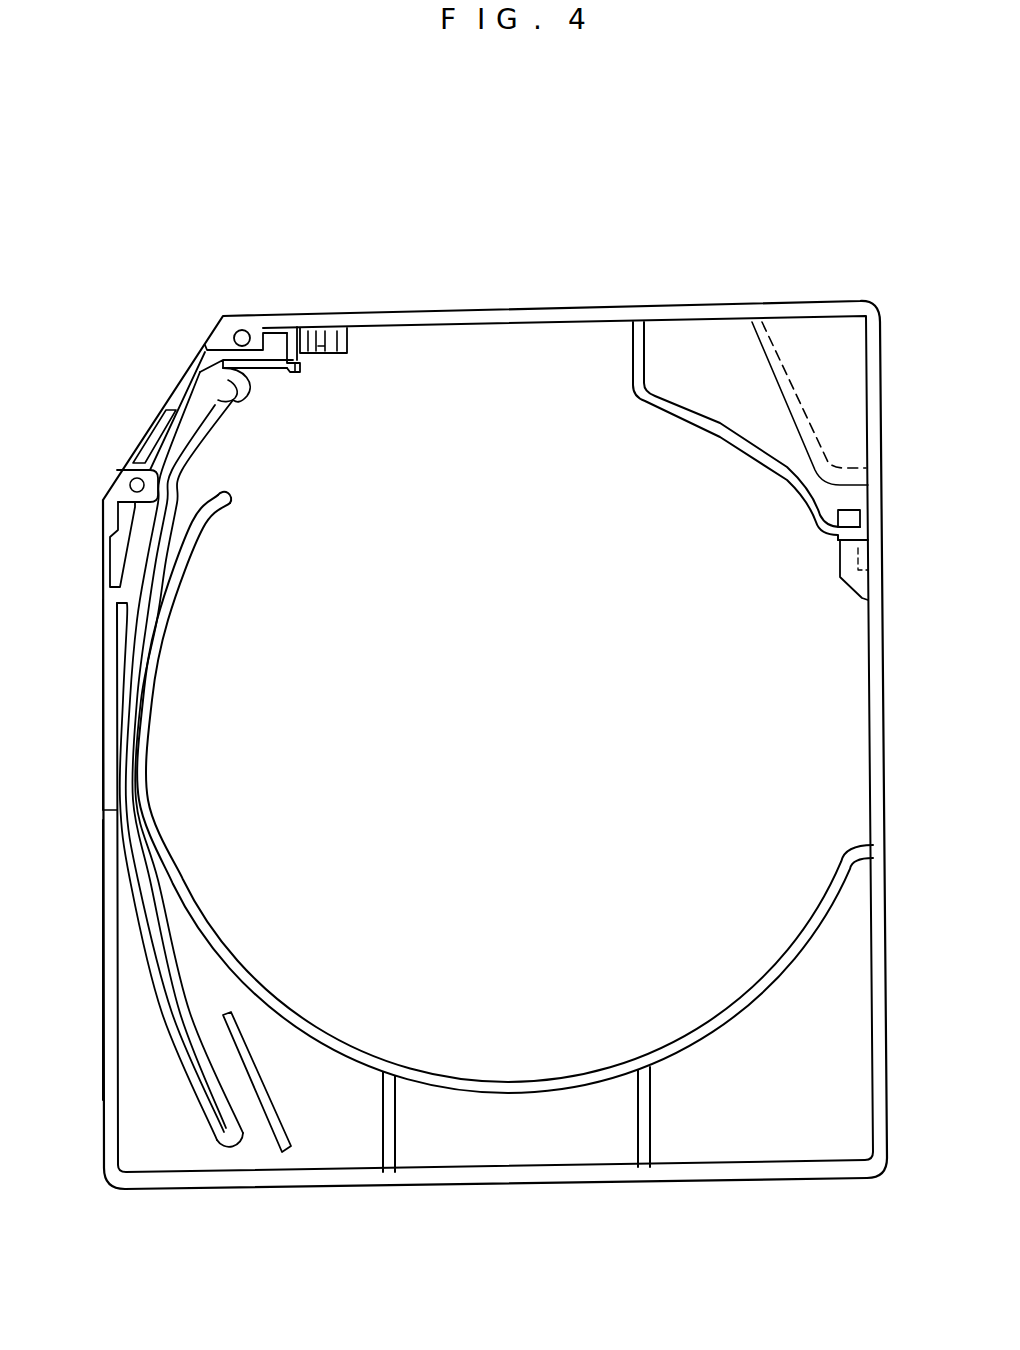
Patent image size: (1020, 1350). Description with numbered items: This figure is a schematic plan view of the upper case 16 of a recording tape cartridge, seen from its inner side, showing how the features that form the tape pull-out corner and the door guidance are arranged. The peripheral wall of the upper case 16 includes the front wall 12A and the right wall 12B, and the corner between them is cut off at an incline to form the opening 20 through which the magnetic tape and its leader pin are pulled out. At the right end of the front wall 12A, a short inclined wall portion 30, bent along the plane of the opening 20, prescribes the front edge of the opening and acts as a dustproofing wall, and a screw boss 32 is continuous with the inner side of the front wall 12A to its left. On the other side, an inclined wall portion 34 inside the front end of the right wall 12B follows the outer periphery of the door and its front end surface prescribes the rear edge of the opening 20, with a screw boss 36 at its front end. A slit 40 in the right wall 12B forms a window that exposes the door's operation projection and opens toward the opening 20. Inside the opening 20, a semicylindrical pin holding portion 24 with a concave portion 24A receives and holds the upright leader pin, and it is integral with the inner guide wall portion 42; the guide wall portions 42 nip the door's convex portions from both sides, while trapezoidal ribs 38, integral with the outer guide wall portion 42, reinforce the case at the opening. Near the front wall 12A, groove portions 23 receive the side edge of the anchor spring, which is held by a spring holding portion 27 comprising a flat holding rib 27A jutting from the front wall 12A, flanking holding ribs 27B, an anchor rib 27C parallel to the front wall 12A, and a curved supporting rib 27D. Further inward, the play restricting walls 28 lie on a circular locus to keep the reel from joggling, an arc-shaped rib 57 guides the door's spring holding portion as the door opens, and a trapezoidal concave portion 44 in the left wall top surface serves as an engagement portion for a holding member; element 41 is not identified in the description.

The upper case 16 is at (628, 126).
The front wall 12A is at (548, 308).
The right wall 12B is at (103, 832).
The opening 20 is at (152, 407).
The groove portions 23 is at (290, 330).
The pin holding portions 24 is at (248, 390).
The concave portions 24A is at (234, 400).
The spring holding portions 27 is at (346, 342).
The holding rib 27A is at (318, 332).
The holding ribs 27B is at (322, 354).
The anchor rib 27C is at (312, 356).
The supporting rib 27D is at (290, 372).
The play restricting walls 28 is at (737, 458).
The inclined wall portions 30 is at (214, 338).
The screw bosses 32 is at (245, 330).
The inclined wall portions 34 is at (134, 553).
The screw bosses 36 is at (120, 468).
The ribs 38 is at (150, 436).
The slit 40 is at (103, 733).
The guide wall 41 is at (199, 360).
The guide wall portions 42 is at (180, 1053).
The concave portion 44 is at (868, 548).
The rib 57 is at (280, 1130).